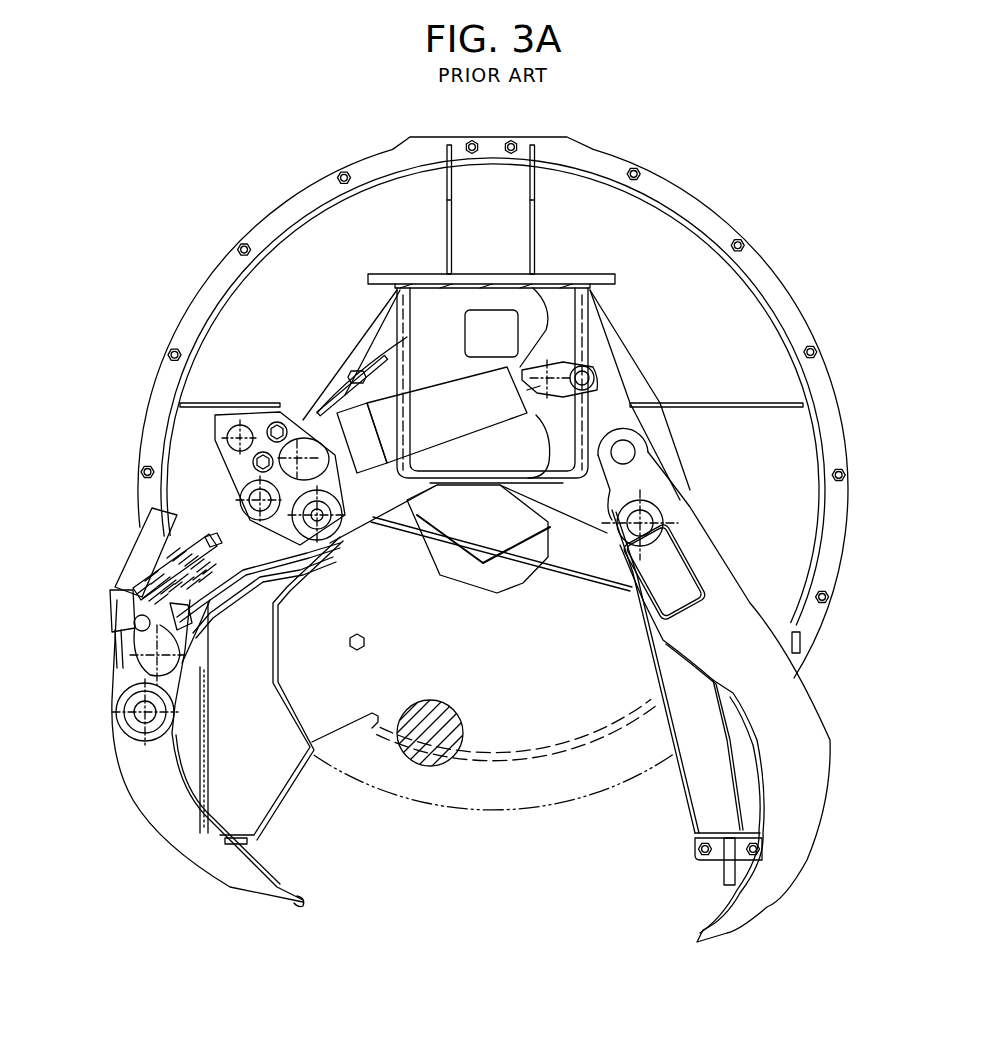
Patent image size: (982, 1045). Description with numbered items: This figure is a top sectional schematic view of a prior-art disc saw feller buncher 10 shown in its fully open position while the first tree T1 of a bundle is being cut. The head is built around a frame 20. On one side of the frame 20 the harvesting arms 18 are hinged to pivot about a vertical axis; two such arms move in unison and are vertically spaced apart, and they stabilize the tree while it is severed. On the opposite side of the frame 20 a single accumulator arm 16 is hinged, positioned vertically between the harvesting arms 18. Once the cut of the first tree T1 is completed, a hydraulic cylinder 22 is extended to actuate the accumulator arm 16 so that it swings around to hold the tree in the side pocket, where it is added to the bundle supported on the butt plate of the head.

The disc saw feller buncher 10 is at (760, 206).
The accumulator arm 16 is at (126, 797).
The harvesting arms 18 is at (838, 748).
The frame 20 is at (666, 381).
The hydraulic cylinder 22 is at (447, 400).
The first tree T1 is at (400, 752).